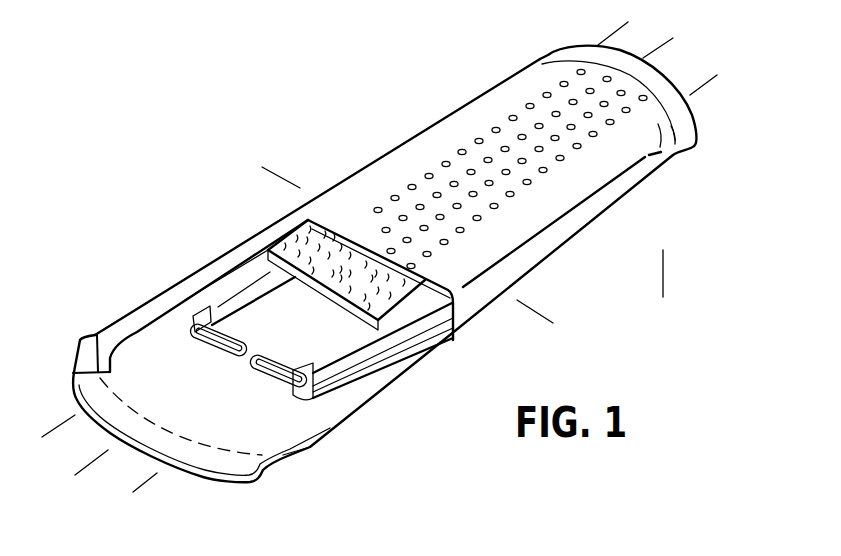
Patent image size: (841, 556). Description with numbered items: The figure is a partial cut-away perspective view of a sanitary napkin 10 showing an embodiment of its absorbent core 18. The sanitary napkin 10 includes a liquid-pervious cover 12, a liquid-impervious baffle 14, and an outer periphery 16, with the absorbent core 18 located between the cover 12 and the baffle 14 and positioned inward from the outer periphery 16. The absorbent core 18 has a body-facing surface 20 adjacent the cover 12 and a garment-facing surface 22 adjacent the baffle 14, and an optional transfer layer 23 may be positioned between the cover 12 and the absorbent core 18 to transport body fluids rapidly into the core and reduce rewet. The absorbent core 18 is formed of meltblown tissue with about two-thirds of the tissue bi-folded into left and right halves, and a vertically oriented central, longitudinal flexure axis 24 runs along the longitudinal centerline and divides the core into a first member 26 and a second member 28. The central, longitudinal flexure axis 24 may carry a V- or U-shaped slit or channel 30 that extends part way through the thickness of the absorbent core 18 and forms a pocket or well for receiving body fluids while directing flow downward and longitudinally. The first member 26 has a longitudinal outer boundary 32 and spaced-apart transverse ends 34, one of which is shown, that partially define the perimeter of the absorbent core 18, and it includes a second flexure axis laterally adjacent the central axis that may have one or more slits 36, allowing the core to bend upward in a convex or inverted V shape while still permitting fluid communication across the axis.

The sanitary napkin 10 is at (318, 85).
The liquid-pervious cover 12 is at (411, 144).
The liquid-impervious baffle 14 is at (222, 481).
The outer periphery 16 is at (345, 178).
The absorbent core 18 is at (204, 284).
The body-facing surface 20 is at (260, 291).
The garment-facing surface 22 is at (283, 397).
The transfer layer 23 is at (407, 292).
The central, longitudinal flexure axis 24 is at (265, 318).
The first member 26 is at (330, 387).
The second member 28 is at (221, 319).
The slit or channel 30 is at (236, 346).
The longitudinal outer boundary 32 is at (330, 352).
The transverse end 34 is at (300, 407).
The slit 36 is at (345, 342).